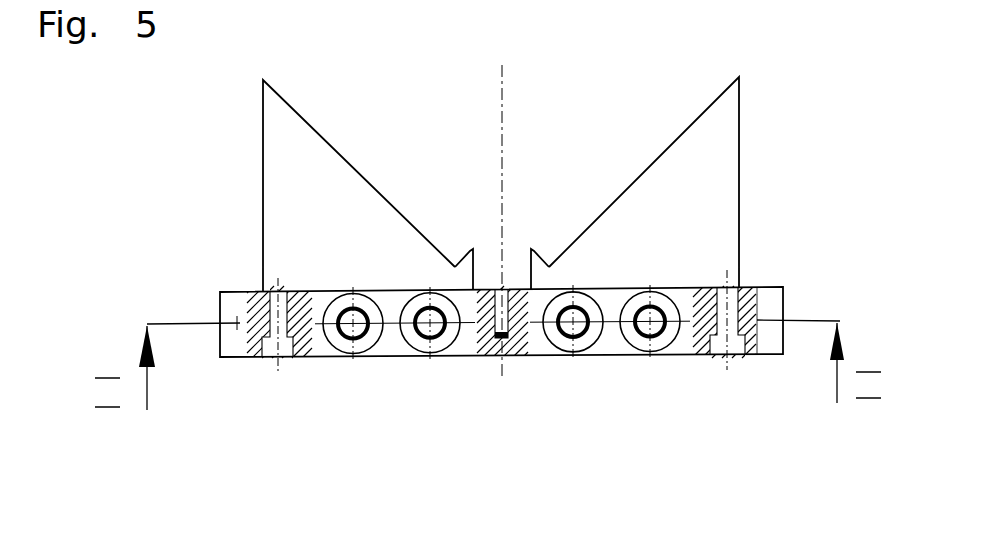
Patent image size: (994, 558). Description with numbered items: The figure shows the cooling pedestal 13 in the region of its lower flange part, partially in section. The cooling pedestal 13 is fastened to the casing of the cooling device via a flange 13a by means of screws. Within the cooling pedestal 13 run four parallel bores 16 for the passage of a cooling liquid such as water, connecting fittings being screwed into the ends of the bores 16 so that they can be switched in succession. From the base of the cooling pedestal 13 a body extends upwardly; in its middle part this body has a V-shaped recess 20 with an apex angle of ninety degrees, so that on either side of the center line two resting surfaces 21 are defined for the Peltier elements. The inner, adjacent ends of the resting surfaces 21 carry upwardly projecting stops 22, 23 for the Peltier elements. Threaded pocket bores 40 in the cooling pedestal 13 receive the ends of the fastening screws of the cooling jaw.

The V-shaped recess 20 is at (424, 77).
The resting surfaces 21 is at (327, 138).
The stop 22 is at (465, 252).
The stop 23 is at (538, 252).
The cooling pedestal 13 is at (262, 242).
The flange 13a is at (773, 302).
The threaded pocket bores 40 is at (498, 340).
The bores 16 is at (580, 330).